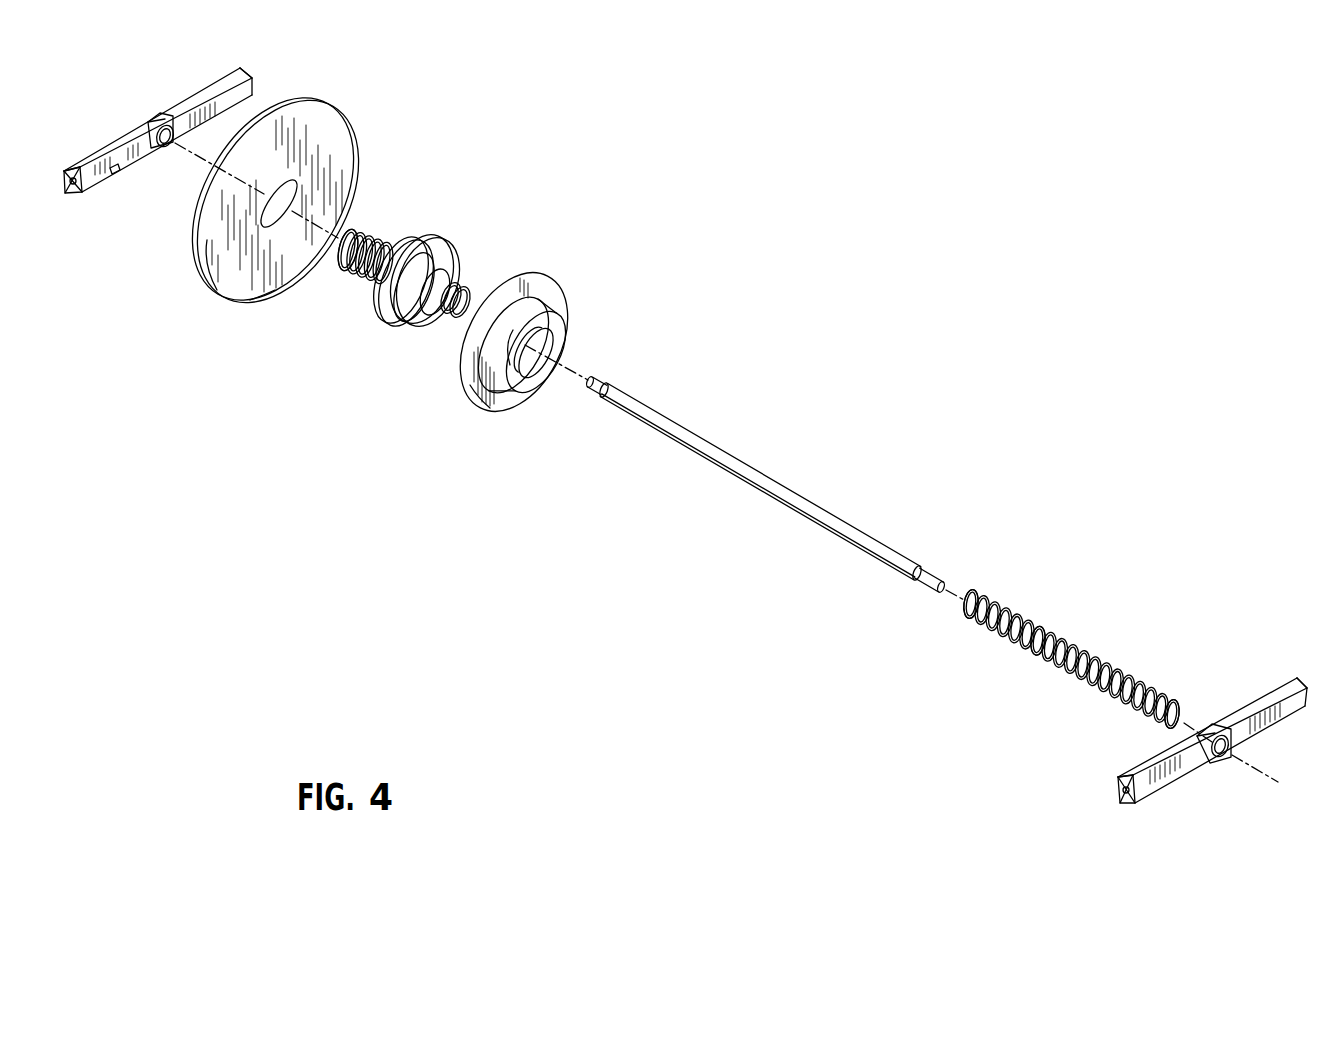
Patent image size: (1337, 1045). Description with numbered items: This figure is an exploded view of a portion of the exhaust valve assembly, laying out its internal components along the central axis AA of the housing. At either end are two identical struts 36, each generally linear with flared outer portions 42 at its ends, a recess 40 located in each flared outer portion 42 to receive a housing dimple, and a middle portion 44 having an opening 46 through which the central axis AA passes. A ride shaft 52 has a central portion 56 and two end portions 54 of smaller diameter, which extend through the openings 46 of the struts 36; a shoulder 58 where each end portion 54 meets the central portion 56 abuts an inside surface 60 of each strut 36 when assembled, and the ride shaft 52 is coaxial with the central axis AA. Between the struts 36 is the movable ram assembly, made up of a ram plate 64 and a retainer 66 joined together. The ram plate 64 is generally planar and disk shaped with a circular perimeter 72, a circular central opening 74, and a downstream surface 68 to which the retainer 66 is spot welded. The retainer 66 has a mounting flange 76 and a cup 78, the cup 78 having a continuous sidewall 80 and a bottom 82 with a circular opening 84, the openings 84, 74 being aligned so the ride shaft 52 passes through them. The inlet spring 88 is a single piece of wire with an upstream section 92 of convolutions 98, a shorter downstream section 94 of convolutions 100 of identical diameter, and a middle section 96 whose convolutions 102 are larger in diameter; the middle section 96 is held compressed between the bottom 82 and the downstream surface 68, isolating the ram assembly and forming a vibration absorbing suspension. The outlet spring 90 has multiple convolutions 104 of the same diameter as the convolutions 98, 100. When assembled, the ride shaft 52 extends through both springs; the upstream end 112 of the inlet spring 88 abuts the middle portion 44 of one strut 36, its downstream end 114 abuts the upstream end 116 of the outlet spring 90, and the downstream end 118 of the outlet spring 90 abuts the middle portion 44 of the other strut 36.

The strut 36 is at (128, 131).
The recess 40 is at (70, 195).
The flared outer portion 42 is at (243, 74).
The middle portion 44 is at (153, 117).
The opening 46 is at (168, 148).
The ride shaft 52 is at (783, 474).
The end portion 54 is at (598, 383).
The central portion 56 is at (704, 440).
The shoulder 58 is at (596, 398).
The inside surface 60 is at (116, 175).
The ram plate 64 is at (357, 127).
The retainer 66 is at (570, 292).
The downstream surface 68 is at (236, 288).
The circular perimeter 72 is at (207, 292).
The circular central opening 74 is at (268, 215).
The mounting flange 76 is at (488, 400).
The cup 78 is at (492, 362).
The continuous sidewall 80 is at (523, 300).
The bottom 82 is at (556, 338).
The circular opening 84 is at (526, 378).
The inlet spring 88 is at (396, 325).
The outlet spring 90 is at (1070, 638).
The upstream section 92 is at (363, 220).
The downstream section 94 is at (452, 270).
The middle section 96 is at (437, 227).
The convolutions 98 is at (346, 265).
The convolutions 100 is at (421, 318).
The convolutions 102 is at (380, 298).
The convolutions 104 is at (1041, 658).
The upstream end 112 is at (352, 230).
The downstream end 114 is at (458, 318).
The upstream end 116 is at (966, 590).
The downstream end 118 is at (1182, 712).
The central axis AA is at (1256, 767).